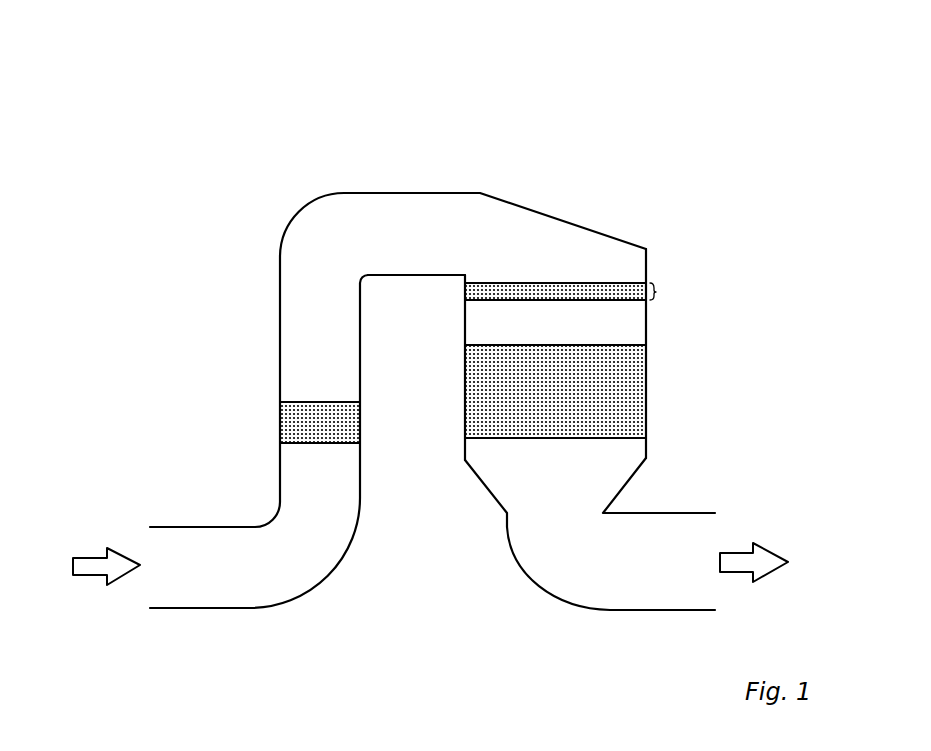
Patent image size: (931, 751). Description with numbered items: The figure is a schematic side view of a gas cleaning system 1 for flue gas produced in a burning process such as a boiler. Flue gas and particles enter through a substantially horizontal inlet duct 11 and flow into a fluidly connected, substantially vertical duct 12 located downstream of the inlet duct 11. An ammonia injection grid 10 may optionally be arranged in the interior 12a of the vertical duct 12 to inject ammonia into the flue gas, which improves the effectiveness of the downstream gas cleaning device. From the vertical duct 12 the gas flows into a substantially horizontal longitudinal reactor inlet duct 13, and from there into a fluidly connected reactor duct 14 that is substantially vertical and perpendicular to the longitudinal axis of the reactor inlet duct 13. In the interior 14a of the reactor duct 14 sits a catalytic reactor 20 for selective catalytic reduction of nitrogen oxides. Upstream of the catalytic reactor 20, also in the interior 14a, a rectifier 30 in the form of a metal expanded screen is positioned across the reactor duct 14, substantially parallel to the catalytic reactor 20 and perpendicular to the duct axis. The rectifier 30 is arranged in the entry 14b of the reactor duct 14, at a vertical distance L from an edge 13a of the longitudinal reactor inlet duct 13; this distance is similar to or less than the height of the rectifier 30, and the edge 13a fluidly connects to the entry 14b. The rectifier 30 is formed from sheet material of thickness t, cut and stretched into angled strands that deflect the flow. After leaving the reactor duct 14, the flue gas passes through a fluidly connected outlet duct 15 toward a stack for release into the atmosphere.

The gas cleaning system 1 is at (355, 130).
The ammonia injection grid 10 is at (280, 430).
The inlet duct 11 is at (190, 525).
The vertical duct 12 is at (280, 323).
The interior of the vertical duct 12a is at (310, 285).
The longitudinal reactor inlet duct 13 is at (408, 193).
The edge of the longitudinal reactor inlet duct 13a is at (427, 275).
The reactor duct 14 is at (660, 313).
The interior of the reactor duct 14a is at (486, 322).
The entry of the reactor duct 14b is at (578, 262).
The outlet duct 15 is at (660, 593).
The catalytic reactor 20 is at (633, 397).
The rectifier 30 is at (610, 290).
The thickness of the sheet material t is at (659, 292).
The vertical distance L is at (462, 278).